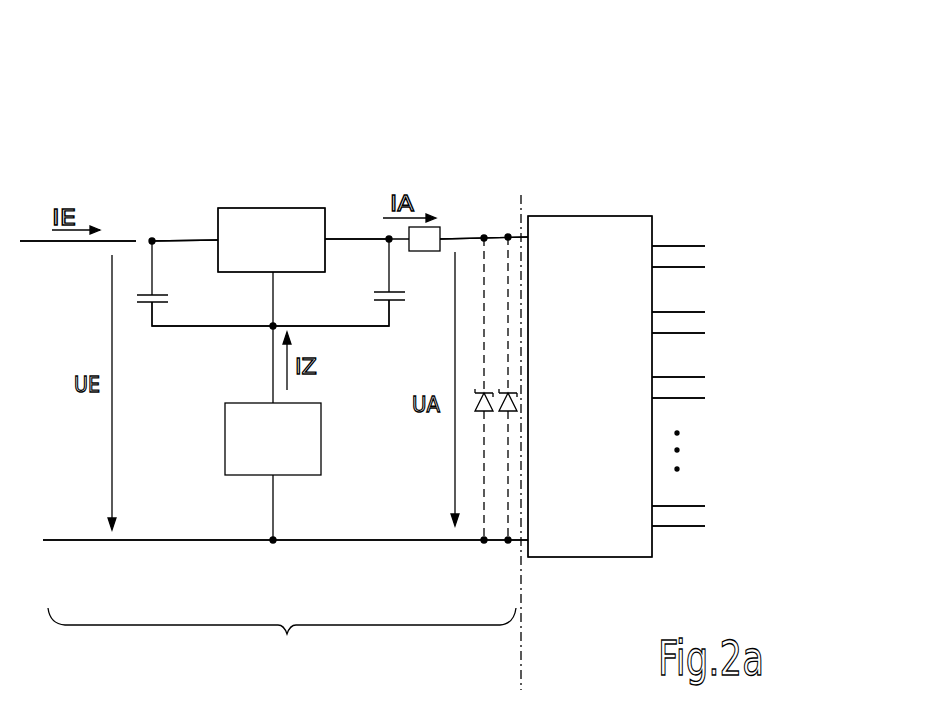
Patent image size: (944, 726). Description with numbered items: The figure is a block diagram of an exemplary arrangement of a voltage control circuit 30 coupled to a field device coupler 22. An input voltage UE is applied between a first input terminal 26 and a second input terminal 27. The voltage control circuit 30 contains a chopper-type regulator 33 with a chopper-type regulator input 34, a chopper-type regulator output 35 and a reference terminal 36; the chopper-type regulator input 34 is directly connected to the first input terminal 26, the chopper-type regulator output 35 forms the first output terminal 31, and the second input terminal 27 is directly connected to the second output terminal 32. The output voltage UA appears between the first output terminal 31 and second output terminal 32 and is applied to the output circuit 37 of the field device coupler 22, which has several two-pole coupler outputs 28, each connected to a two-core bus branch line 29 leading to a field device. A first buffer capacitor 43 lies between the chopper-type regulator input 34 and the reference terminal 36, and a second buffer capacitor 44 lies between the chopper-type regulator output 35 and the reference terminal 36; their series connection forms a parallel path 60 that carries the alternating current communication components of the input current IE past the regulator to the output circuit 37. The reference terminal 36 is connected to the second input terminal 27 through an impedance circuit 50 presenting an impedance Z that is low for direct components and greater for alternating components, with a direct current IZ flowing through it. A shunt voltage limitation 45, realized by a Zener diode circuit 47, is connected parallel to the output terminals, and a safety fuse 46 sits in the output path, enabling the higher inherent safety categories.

The field device coupler 22 is at (631, 161).
The first input terminal 26 is at (135, 240).
The second input terminal 27 is at (130, 542).
The coupler outputs 28 is at (644, 238).
The bus branch line 29 is at (711, 238).
The voltage control circuit 30 is at (282, 638).
The first output terminal 31 is at (457, 237).
The second output terminal 32 is at (435, 540).
The chopper-type regulator 33 is at (281, 213).
The chopper-type regulator input 34 is at (215, 238).
The chopper-type regulator output 35 is at (328, 238).
The reference terminal 36 is at (271, 240).
The output circuit 37 is at (563, 558).
The first buffer capacitor 43 is at (163, 296).
The second buffer capacitor 44 is at (385, 292).
The shunt voltage limitation 45 is at (542, 327).
The safety fuse 46 is at (422, 251).
The Zener diode circuit 47 is at (490, 230).
The impedance circuit 50 is at (320, 432).
The parallel path 60 is at (198, 340).